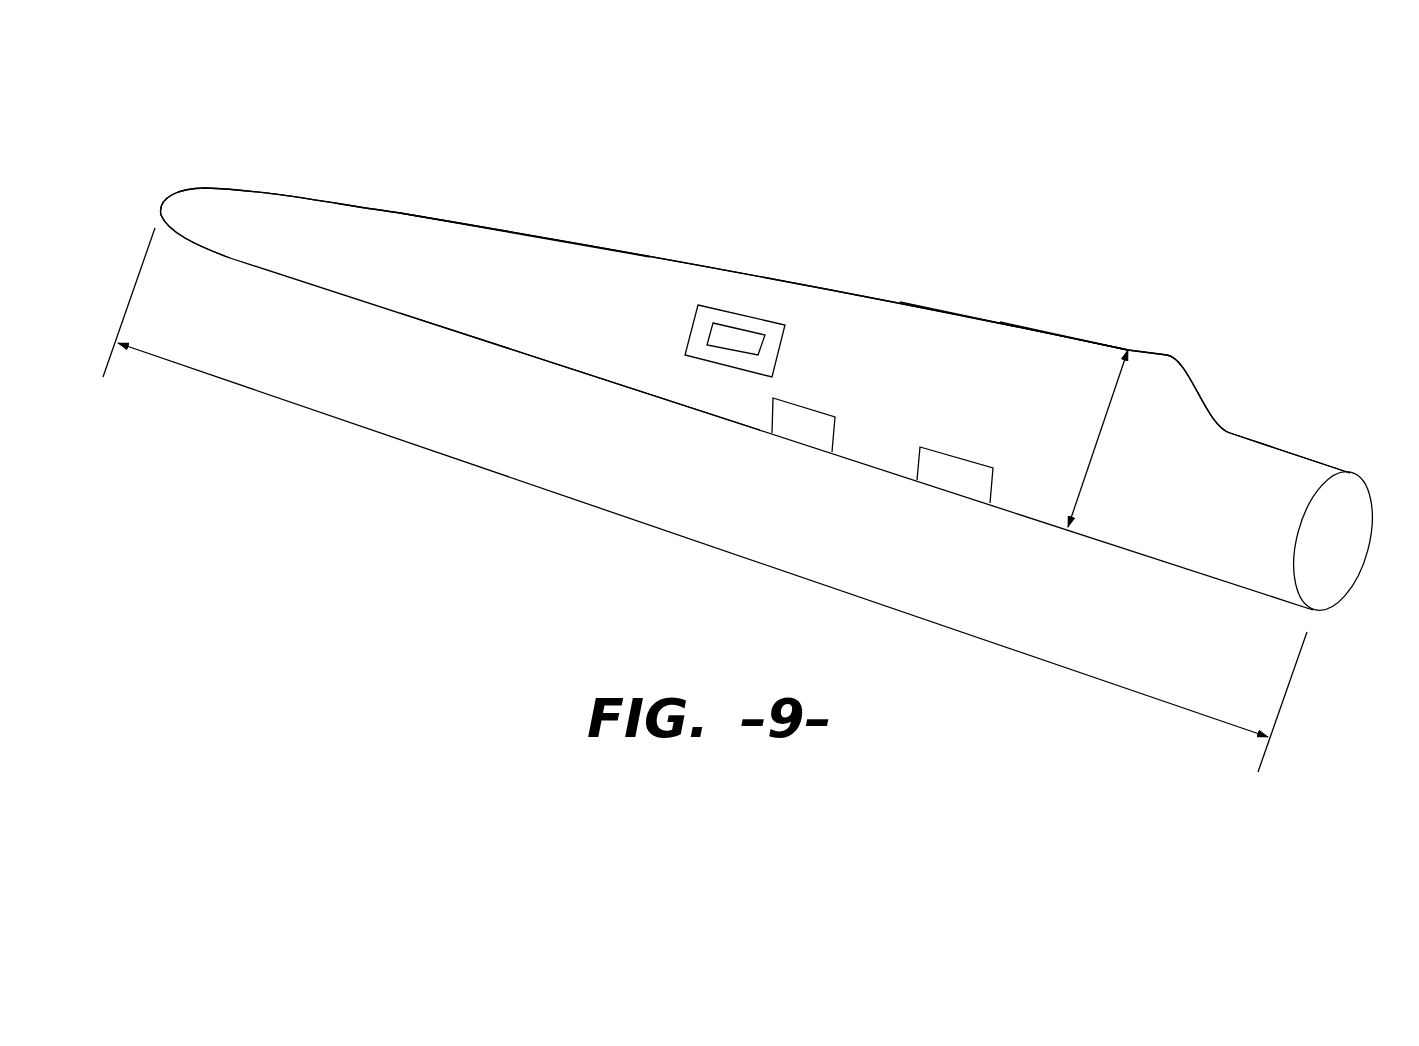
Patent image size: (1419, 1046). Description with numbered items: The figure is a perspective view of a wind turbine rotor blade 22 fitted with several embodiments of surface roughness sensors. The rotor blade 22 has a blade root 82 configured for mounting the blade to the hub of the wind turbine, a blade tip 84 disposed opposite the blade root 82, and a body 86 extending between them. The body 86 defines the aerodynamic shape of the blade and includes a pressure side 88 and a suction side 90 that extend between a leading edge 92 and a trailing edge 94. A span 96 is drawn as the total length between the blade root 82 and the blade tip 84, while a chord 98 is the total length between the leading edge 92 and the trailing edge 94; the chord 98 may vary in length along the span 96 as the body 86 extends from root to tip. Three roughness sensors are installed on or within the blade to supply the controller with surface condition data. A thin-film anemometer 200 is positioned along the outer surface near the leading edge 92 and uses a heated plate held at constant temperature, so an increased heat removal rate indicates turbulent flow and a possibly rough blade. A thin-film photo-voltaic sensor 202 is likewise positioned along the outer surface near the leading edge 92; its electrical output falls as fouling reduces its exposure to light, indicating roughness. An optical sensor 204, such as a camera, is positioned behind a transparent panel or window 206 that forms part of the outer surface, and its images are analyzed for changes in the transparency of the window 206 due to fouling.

The rotor blade 22 is at (1227, 260).
The blade root 82 is at (1273, 445).
The blade tip 84 is at (155, 208).
The body 86 is at (627, 298).
The pressure side 88 is at (550, 253).
The suction side 90 is at (933, 345).
The leading edge 92 is at (537, 362).
The trailing edge 94 is at (1052, 332).
The span 96 is at (643, 525).
The chord 98 is at (1108, 415).
The thin-film anemometer 200 is at (953, 480).
The thin-film photo-voltaic sensor 202 is at (803, 430).
The optical sensor 204 is at (730, 328).
The transparent panel or window 206 is at (767, 323).